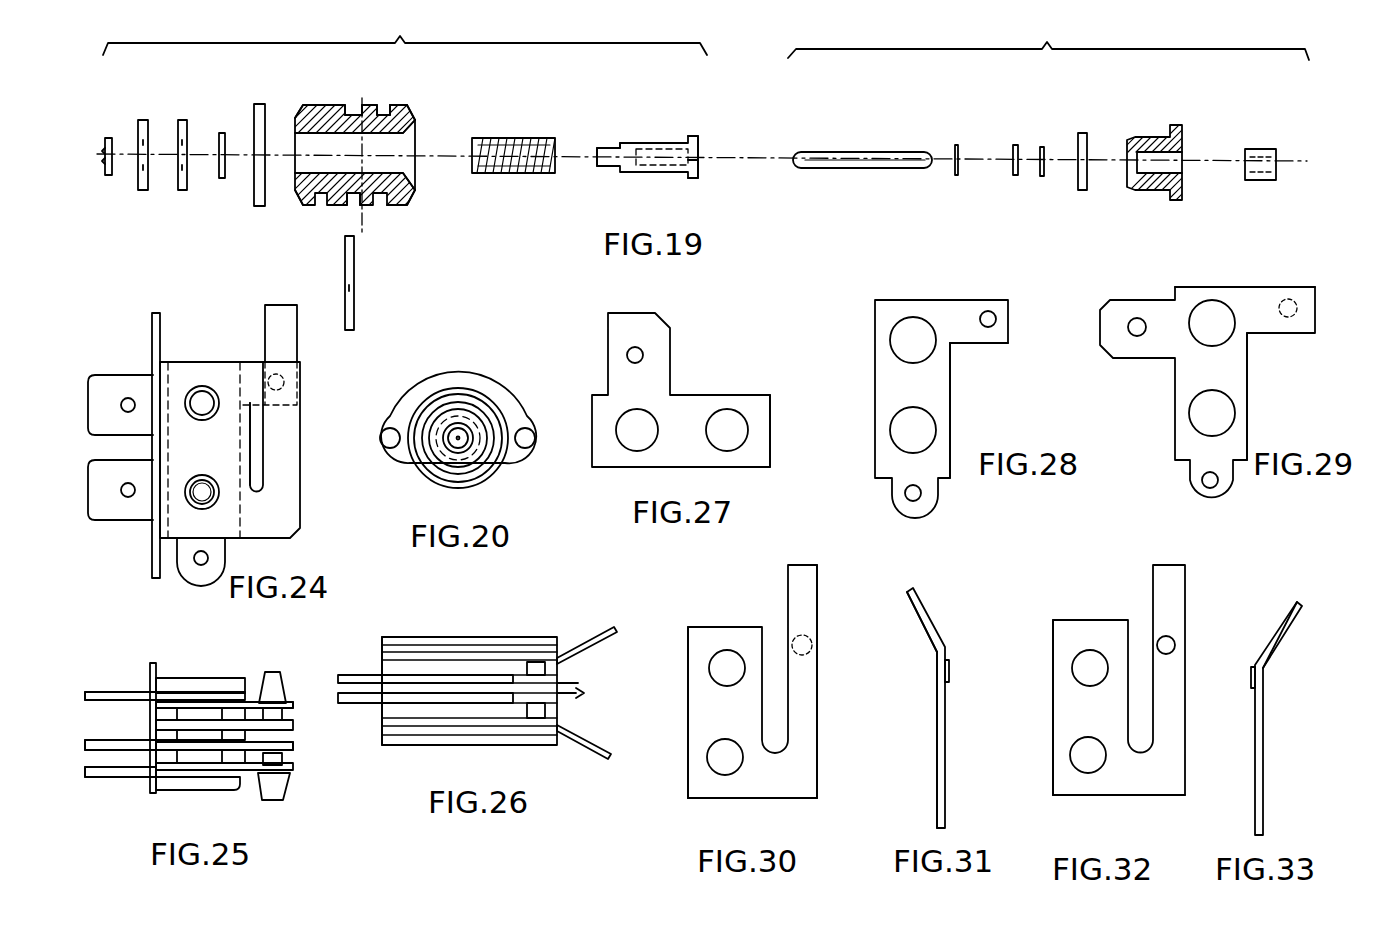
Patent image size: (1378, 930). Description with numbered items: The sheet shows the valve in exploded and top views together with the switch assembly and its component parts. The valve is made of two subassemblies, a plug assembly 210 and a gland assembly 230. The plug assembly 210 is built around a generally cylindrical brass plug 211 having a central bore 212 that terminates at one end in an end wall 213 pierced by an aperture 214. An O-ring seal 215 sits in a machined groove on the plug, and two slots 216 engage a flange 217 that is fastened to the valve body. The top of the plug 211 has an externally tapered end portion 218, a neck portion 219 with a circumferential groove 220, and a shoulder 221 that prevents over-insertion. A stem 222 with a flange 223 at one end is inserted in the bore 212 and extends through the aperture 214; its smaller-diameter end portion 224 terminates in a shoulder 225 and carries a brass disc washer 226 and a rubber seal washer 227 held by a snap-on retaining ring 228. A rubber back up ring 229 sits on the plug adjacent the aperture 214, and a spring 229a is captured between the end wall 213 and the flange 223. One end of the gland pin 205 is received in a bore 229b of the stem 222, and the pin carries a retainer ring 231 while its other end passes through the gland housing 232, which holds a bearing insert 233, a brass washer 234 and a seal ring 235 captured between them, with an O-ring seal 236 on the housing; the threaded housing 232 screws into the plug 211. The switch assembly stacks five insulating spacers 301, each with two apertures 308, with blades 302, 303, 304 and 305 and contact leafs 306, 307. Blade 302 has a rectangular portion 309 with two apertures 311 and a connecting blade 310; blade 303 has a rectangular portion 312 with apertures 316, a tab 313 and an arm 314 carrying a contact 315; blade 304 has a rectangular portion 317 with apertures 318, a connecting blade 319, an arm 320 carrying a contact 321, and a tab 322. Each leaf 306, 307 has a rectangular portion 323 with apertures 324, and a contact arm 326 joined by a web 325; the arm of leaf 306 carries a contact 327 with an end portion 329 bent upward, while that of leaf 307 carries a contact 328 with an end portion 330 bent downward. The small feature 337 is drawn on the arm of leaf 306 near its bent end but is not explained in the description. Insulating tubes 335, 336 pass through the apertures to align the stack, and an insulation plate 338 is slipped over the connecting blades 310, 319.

In FIG. 19, the plug assembly 210 is at (405, 34).
In FIG. 19, the gland assembly 230 is at (1048, 39).
In FIG. 19, the gland pin 205 is at (858, 170).
In FIG. 20, the gland pin 205 is at (458, 428).
In FIG. 19, the plug 211 is at (292, 150).
In FIG. 20, the plug 211 is at (470, 400).
In FIG. 19, the central bore 212 is at (414, 165).
In FIG. 19, the end wall 213 is at (293, 178).
In FIG. 19, the aperture 214 is at (297, 130).
In FIG. 19, the O-ring seal 215 is at (258, 104).
In FIG. 19, the slots 216 is at (352, 106).
In FIG. 19, the flange 217 is at (354, 318).
In FIG. 20, the flange 217 is at (505, 390).
In FIG. 19, the tapered end portion 218 is at (410, 200).
In FIG. 19, the neck portion 219 is at (410, 110).
In FIG. 19, the circumferential groove 220 is at (400, 110).
In FIG. 19, the shoulder 221 is at (388, 108).
In FIG. 19, the stem 222 is at (648, 143).
In FIG. 19, the flange 223 is at (697, 140).
In FIG. 19, the end portion 224 is at (600, 150).
In FIG. 19, the shoulder 225 is at (617, 146).
In FIG. 19, the brass disc washer 226 is at (184, 120).
In FIG. 19, the rubber seal washer 227 is at (145, 120).
In FIG. 19, the retaining ring 228 is at (108, 138).
In FIG. 19, the rubber back up ring 229 is at (221, 180).
In FIG. 19, the spring 229a is at (517, 175).
In FIG. 19, the bore 229b is at (698, 162).
In FIG. 19, the retainer ring 231 is at (956, 166).
In FIG. 19, the gland housing 232 is at (1176, 202).
In FIG. 20, the gland housing 232 is at (482, 448).
In FIG. 19, the bearing insert 233 is at (1255, 182).
In FIG. 20, the bearing insert 233 is at (468, 448).
In FIG. 19, the brass washer 234 is at (1014, 163).
In FIG. 19, the seal ring 235 is at (1042, 178).
In FIG. 19, the O-ring seal 236 is at (1083, 192).
In FIG. 24, the insulating spacer 301 is at (245, 540).
In FIG. 25, the insulating spacer 301 is at (190, 678).
In FIG. 26, the insulating spacer 301 is at (428, 637).
In FIG. 27, the blade 302 is at (718, 359).
In FIG. 25, the blade 302 is at (77, 693).
In FIG. 26, the blade 302 is at (372, 653).
In FIG. 28, the blade 303 is at (949, 295).
In FIG. 25, the blade 303 is at (293, 702).
In FIG. 29, the blade 304 is at (1217, 276).
In FIG. 25, the blade 304 is at (293, 742).
In FIG. 25, the blade 305 is at (90, 775).
In FIG. 26, the blade 305 is at (380, 727).
In FIG. 25, the contact leaf 306 is at (280, 672).
In FIG. 26, the contact leaf 306 is at (586, 648).
In FIG. 30, the contact leaf 306 is at (688, 622).
In FIG. 31, the contact leaf 306 is at (906, 633).
In FIG. 25, the contact leaf 307 is at (288, 776).
In FIG. 32, the contact leaf 307 is at (1096, 614).
In FIG. 33, the contact leaf 307 is at (1274, 620).
In FIG. 24, the apertures 308 is at (205, 386).
In FIG. 27, the rectangular portion 309 is at (772, 428).
In FIG. 27, the connecting blade 310 is at (670, 366).
In FIG. 27, the apertures 311 is at (727, 410).
In FIG. 28, the rectangular portion 312 is at (951, 430).
In FIG. 28, the tab 313 is at (930, 498).
In FIG. 28, the arm 314 is at (990, 347).
In FIG. 28, the contact 315 is at (997, 320).
In FIG. 28, the apertures 316 is at (930, 412).
In FIG. 29, the rectangular portion 317 is at (1247, 402).
In FIG. 29, the apertures 318 is at (1218, 347).
In FIG. 29, the connecting blade 319 is at (1137, 358).
In FIG. 29, the arm 320 is at (1262, 287).
In FIG. 29, the contact 321 is at (1287, 317).
In FIG. 29, the tab 322 is at (1222, 498).
In FIG. 30, the rectangular portion 323 is at (684, 723).
In FIG. 32, the rectangular portion 323 is at (1078, 663).
In FIG. 30, the apertures 324 is at (713, 672).
In FIG. 32, the apertures 324 is at (1065, 697).
In FIG. 30, the web 325 is at (797, 798).
In FIG. 32, the web 325 is at (1162, 787).
In FIG. 30, the contact arm 326 is at (818, 723).
In FIG. 30, the contact 327 is at (811, 645).
In FIG. 32, the contact 328 is at (1172, 642).
In FIG. 33, the contact 328 is at (1251, 673).
In FIG. 31, the end portion 329 is at (930, 608).
In FIG. 33, the end portion 330 is at (1284, 633).
In FIG. 24, the insulating tube 335 is at (218, 498).
In FIG. 24, the insulating tube 336 is at (187, 390).
In FIG. 31, the insulating tube 336 is at (945, 746).
In FIG. 31, the contact bump 337 is at (952, 670).
In FIG. 24, the insulation plate 338 is at (153, 578).